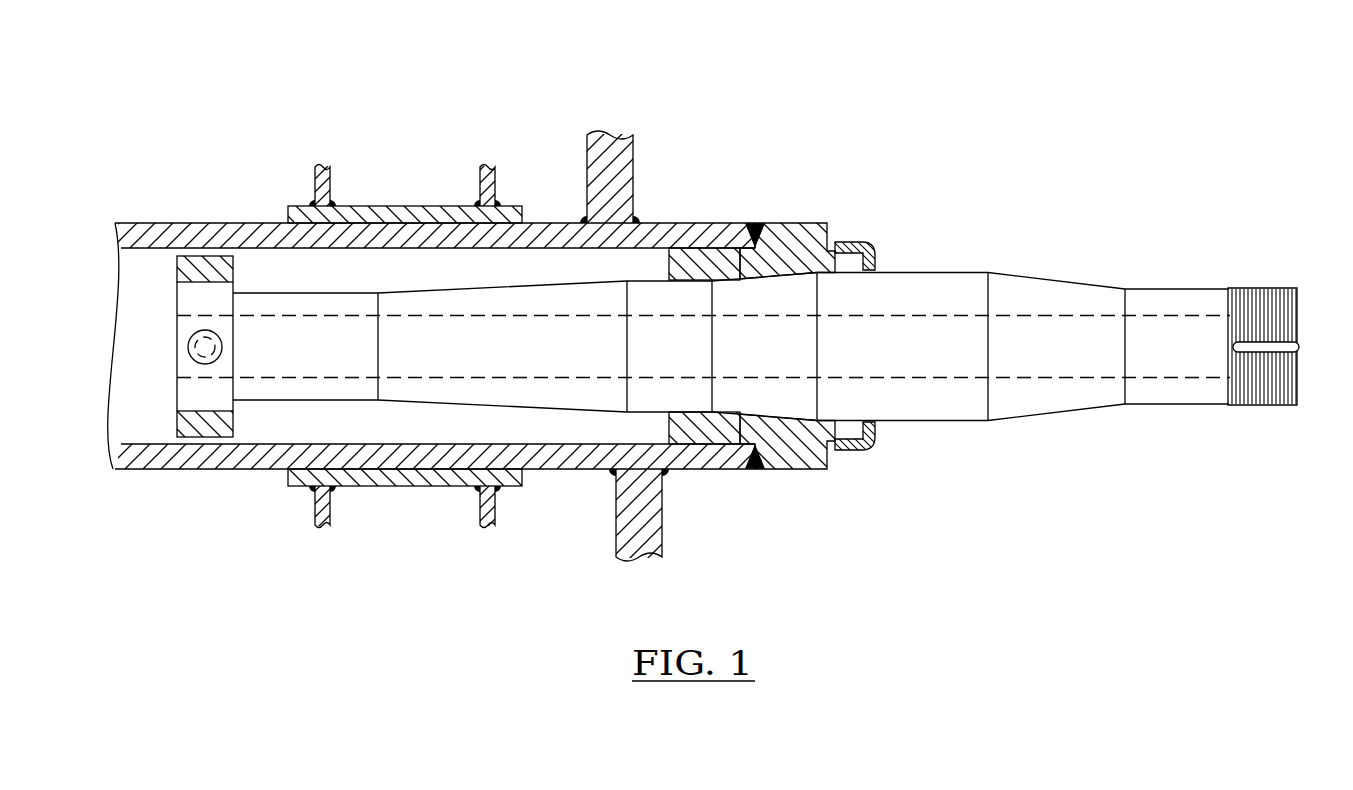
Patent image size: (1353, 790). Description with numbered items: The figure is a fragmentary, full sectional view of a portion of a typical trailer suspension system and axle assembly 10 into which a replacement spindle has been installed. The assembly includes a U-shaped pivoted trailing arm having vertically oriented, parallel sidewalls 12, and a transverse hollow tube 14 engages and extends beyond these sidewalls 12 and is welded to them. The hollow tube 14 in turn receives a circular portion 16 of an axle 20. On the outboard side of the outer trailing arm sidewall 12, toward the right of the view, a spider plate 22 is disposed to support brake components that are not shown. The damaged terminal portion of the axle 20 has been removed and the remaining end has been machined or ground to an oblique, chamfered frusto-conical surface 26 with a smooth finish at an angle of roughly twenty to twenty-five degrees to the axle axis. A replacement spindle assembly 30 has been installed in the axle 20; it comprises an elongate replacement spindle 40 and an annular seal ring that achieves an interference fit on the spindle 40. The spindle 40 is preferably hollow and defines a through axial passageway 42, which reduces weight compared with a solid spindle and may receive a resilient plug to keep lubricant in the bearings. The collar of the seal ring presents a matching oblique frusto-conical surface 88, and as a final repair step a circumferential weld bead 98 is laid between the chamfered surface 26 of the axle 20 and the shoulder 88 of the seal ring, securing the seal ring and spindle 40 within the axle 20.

The suspension system and axle assembly 10 is at (1135, 151).
The sidewalls 12 is at (479, 182).
The hollow tube 14 is at (425, 480).
The circular portion 16 is at (562, 460).
The axle 20 is at (676, 535).
The spider plate 22 is at (611, 150).
The frusto-conical surface 26 is at (749, 221).
The replacement spindle assembly 30 is at (899, 449).
The replacement spindle 40 is at (1077, 265).
The axial passageway 42 is at (922, 320).
The frusto-conical surface 88 is at (757, 471).
The weld bead 98 is at (762, 226).